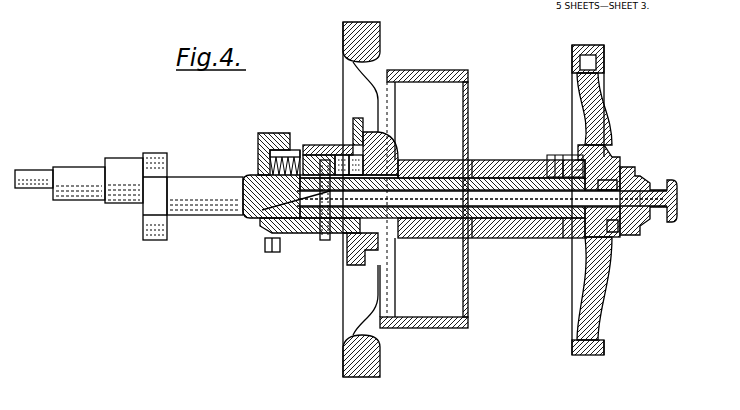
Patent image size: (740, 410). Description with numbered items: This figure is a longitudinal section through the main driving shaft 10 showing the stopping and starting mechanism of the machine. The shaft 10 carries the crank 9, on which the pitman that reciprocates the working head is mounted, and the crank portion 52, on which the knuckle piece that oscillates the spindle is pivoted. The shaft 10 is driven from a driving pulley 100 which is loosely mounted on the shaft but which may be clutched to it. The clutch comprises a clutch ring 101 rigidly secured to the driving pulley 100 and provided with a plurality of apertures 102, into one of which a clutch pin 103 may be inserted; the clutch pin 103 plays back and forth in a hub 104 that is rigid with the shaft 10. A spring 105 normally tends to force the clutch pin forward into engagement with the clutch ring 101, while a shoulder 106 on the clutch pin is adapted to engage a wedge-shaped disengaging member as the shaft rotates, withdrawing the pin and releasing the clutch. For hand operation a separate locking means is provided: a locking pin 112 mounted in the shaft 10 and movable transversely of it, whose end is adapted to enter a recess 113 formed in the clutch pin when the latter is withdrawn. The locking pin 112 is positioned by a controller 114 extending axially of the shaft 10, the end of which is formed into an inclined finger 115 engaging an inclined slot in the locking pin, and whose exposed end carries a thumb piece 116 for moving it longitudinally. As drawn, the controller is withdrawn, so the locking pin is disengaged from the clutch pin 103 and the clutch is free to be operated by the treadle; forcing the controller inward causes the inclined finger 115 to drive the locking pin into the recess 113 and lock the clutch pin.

The crank 9 is at (88, 201).
The main driving shaft 10 is at (188, 176).
The crank portion 52 is at (46, 188).
The driving pulley 100 is at (468, 72).
The clutch ring 101 is at (363, 234).
The apertures 102 is at (322, 238).
The clutch pin 103 is at (392, 155).
The hub 104 is at (320, 145).
The spring 105 is at (290, 133).
The shoulder 106 is at (295, 155).
The locking pin 112 is at (252, 220).
The recess 113 is at (336, 142).
The controller 114 is at (412, 240).
The inclined finger 115 is at (280, 240).
The thumb piece 116 is at (638, 170).